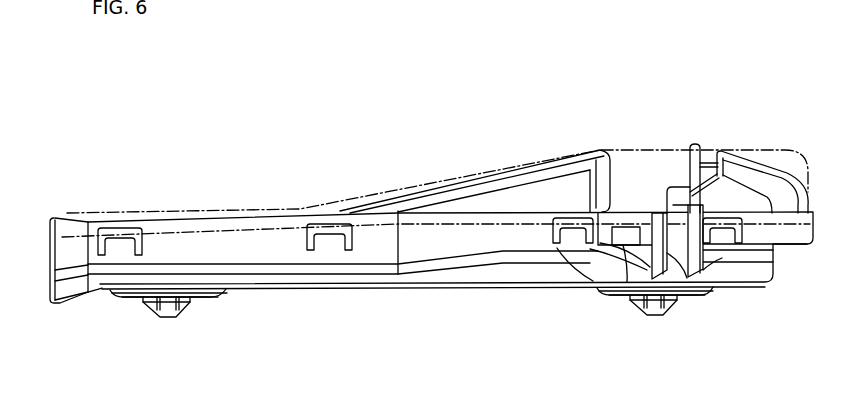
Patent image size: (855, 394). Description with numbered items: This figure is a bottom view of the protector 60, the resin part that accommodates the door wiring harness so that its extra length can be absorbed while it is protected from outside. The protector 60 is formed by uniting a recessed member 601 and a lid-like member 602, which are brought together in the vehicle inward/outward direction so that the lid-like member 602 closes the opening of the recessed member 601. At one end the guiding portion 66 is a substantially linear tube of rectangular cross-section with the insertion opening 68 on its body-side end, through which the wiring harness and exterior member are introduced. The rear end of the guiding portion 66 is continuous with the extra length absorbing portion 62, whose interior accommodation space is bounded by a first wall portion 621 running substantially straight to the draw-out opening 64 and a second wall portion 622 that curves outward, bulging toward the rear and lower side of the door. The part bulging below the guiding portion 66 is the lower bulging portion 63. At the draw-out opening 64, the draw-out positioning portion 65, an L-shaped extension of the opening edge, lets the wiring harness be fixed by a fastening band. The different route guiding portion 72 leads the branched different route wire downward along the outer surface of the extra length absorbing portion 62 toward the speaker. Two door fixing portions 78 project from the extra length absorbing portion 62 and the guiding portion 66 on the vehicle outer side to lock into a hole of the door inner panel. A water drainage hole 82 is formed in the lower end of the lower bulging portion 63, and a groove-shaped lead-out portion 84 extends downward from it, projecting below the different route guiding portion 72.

The protector 60 is at (236, 136).
The insertion opening 68 is at (49, 242).
The guiding portion 66 is at (206, 219).
The recessed member 601 is at (309, 222).
The lid-like member 602 is at (358, 206).
The extra length absorbing portion 62 is at (548, 166).
The first wall portion 621 is at (497, 197).
The draw-out opening 64 is at (612, 177).
The draw-out positioning portion 65 is at (697, 143).
The second wall portion 622 is at (735, 197).
The different route guiding portion 72 is at (785, 193).
The lower bulging portion 63 is at (623, 245).
The door fixing portion 78 is at (168, 310).
The water drainage hole 82 is at (675, 262).
The lead-out portion 84 is at (701, 264).